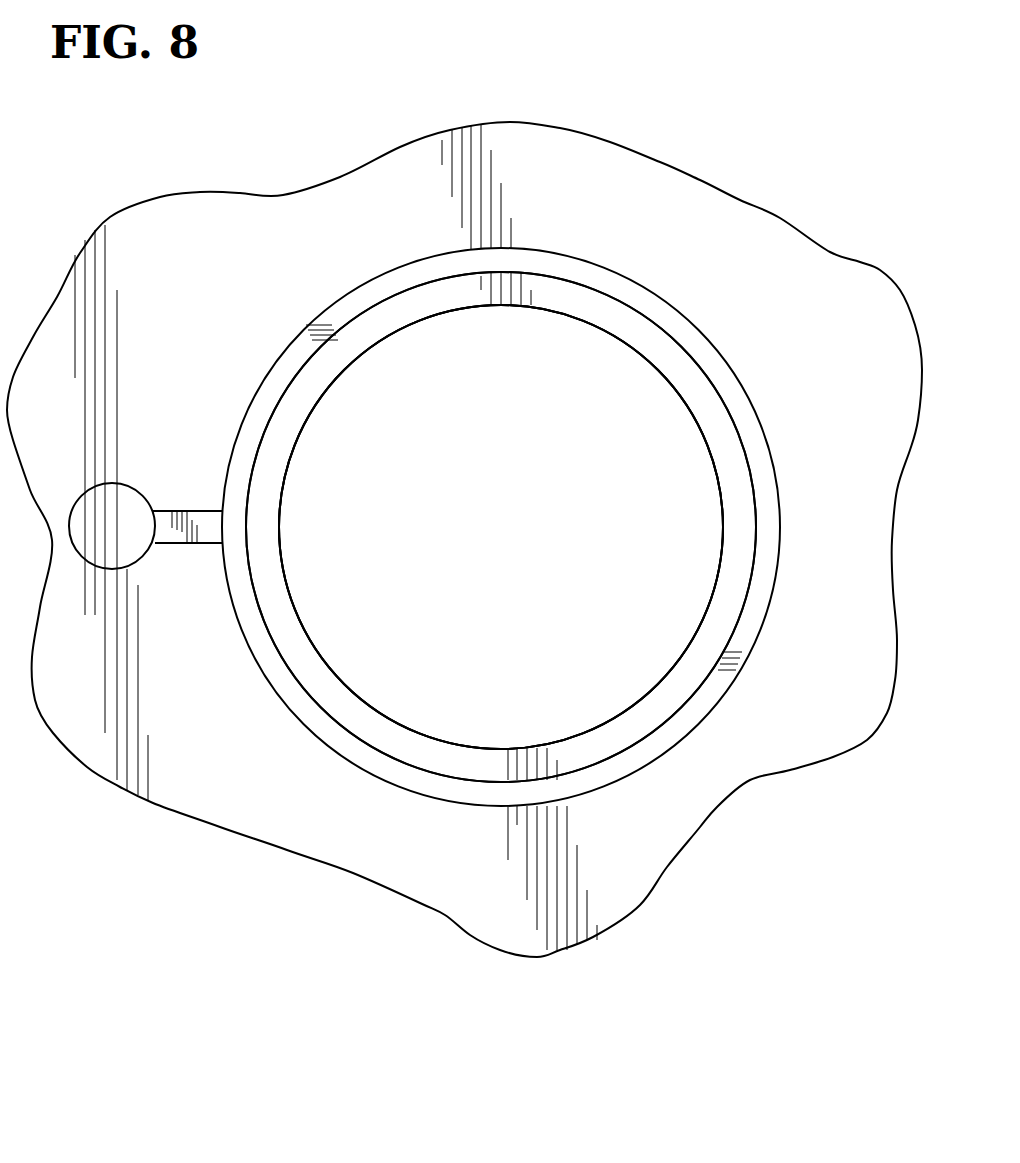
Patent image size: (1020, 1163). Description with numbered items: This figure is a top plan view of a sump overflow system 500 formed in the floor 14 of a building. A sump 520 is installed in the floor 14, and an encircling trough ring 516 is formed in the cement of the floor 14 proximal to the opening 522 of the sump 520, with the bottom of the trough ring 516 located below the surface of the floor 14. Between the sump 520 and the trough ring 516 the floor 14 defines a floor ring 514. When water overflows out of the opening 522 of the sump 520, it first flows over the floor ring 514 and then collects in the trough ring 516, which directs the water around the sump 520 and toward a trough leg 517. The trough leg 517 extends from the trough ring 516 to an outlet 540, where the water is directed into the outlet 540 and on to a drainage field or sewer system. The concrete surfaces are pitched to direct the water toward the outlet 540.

The sump overflow system 500 is at (697, 230).
The trough ring 516 is at (556, 260).
The floor ring 514 is at (719, 428).
The sump 520 is at (622, 346).
The opening 522 is at (588, 680).
The outlet 540 is at (107, 517).
The trough leg 517 is at (212, 520).
The floor 14 is at (842, 484).